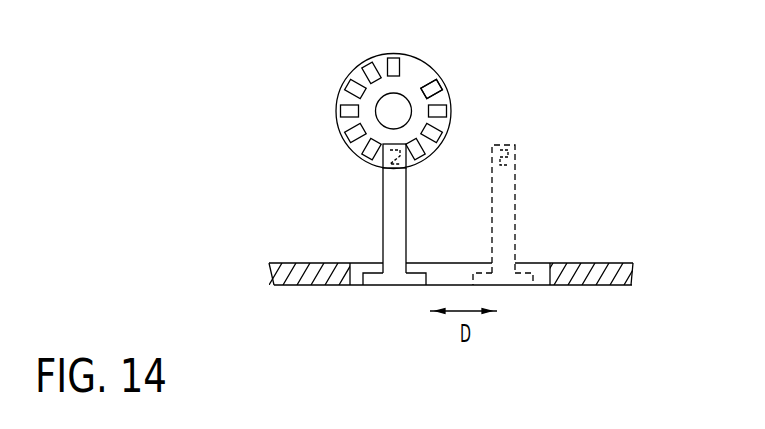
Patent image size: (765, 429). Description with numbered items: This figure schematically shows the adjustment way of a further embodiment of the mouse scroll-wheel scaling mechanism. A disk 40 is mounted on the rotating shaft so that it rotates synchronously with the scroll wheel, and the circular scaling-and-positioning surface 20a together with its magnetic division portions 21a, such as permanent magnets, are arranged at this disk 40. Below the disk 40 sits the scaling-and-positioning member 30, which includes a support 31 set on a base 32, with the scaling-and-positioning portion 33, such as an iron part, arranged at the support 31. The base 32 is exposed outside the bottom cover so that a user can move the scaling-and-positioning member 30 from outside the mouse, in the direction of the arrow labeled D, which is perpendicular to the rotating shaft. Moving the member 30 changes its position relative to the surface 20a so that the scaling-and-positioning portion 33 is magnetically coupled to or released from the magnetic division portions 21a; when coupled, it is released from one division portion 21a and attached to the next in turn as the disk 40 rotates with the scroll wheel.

The disk 40 is at (347, 70).
The circular scaling-and-positioning surface 20a is at (445, 80).
The magnetic division portions 21a is at (347, 113).
The scaling-and-positioning member 30 is at (383, 295).
The support 31 is at (397, 237).
The base 32 is at (371, 279).
The scaling-and-positioning portion 33 is at (383, 169).